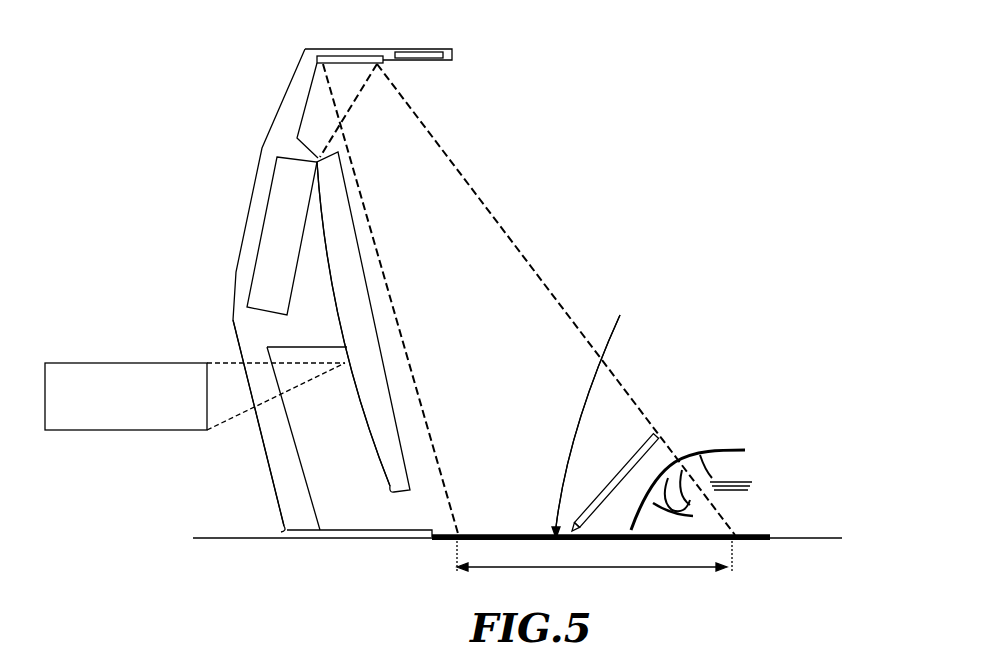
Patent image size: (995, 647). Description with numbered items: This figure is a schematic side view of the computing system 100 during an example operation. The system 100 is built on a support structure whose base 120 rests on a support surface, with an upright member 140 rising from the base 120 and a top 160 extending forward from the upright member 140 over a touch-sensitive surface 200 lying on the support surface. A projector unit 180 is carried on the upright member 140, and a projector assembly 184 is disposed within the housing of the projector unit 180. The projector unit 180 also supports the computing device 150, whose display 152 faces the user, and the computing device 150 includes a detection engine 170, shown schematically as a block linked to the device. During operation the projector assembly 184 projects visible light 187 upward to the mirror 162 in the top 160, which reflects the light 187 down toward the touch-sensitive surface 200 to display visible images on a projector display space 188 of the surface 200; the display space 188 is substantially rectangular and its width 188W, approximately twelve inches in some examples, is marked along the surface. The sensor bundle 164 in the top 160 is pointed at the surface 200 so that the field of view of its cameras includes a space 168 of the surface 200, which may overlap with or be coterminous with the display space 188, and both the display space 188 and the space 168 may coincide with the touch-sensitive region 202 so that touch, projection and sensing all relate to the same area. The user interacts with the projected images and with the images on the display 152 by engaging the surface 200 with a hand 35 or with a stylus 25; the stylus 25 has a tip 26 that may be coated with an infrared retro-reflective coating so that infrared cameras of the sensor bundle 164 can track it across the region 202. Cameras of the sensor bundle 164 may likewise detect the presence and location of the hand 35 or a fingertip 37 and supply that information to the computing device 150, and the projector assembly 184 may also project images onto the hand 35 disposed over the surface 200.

The computing system 100 is at (651, 167).
The base 120 is at (307, 548).
The upright member 140 is at (227, 196).
The computing device 150 is at (350, 416).
The display 152 is at (390, 372).
The top 160 is at (297, 39).
The mirror 162 is at (360, 49).
The sensor bundle 164 is at (422, 49).
The detection engine 170 is at (122, 432).
The projector unit 180 is at (249, 327).
The projector assembly 184 is at (265, 167).
The visible light 187 is at (427, 123).
The projector display space 188 is at (611, 416).
The space 168 is at (613, 410).
The width 188W is at (594, 570).
The touch-sensitive surface 200 is at (767, 542).
The touch-sensitive region 202 is at (485, 535).
The fingertip 37 is at (645, 540).
The stylus 25 is at (632, 462).
The tip 26 is at (575, 517).
The hand 35 is at (718, 453).